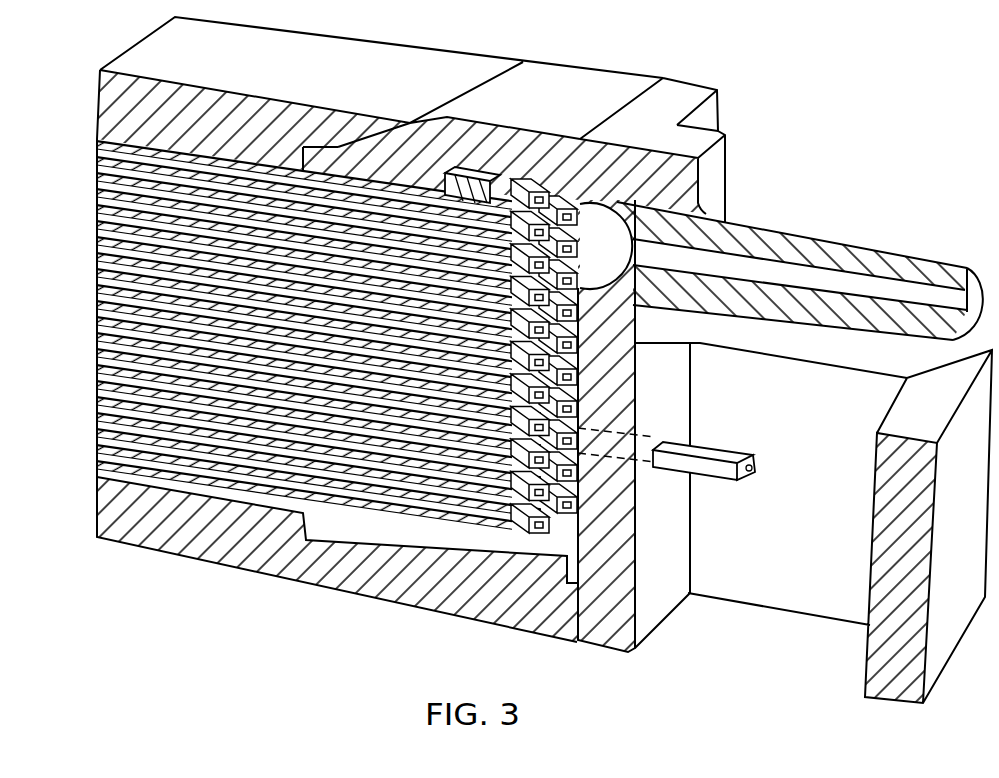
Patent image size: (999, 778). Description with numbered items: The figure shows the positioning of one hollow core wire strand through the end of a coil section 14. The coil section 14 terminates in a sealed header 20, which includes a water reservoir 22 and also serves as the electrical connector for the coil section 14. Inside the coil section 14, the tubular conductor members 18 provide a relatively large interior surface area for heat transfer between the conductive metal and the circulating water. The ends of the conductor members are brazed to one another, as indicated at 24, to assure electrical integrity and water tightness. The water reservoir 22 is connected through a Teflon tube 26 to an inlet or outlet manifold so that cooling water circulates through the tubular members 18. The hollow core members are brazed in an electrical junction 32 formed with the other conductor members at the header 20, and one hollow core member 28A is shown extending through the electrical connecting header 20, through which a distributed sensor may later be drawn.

The coil section 14 is at (92, 282).
The tubular conductor member 18 is at (512, 500).
The header 20 is at (592, 87).
The water reservoir 22 is at (552, 572).
The brazed joint 24 is at (458, 518).
The Teflon tube 26 is at (833, 252).
The hollow core member 28A is at (737, 453).
The electrical junction 32 is at (493, 183).